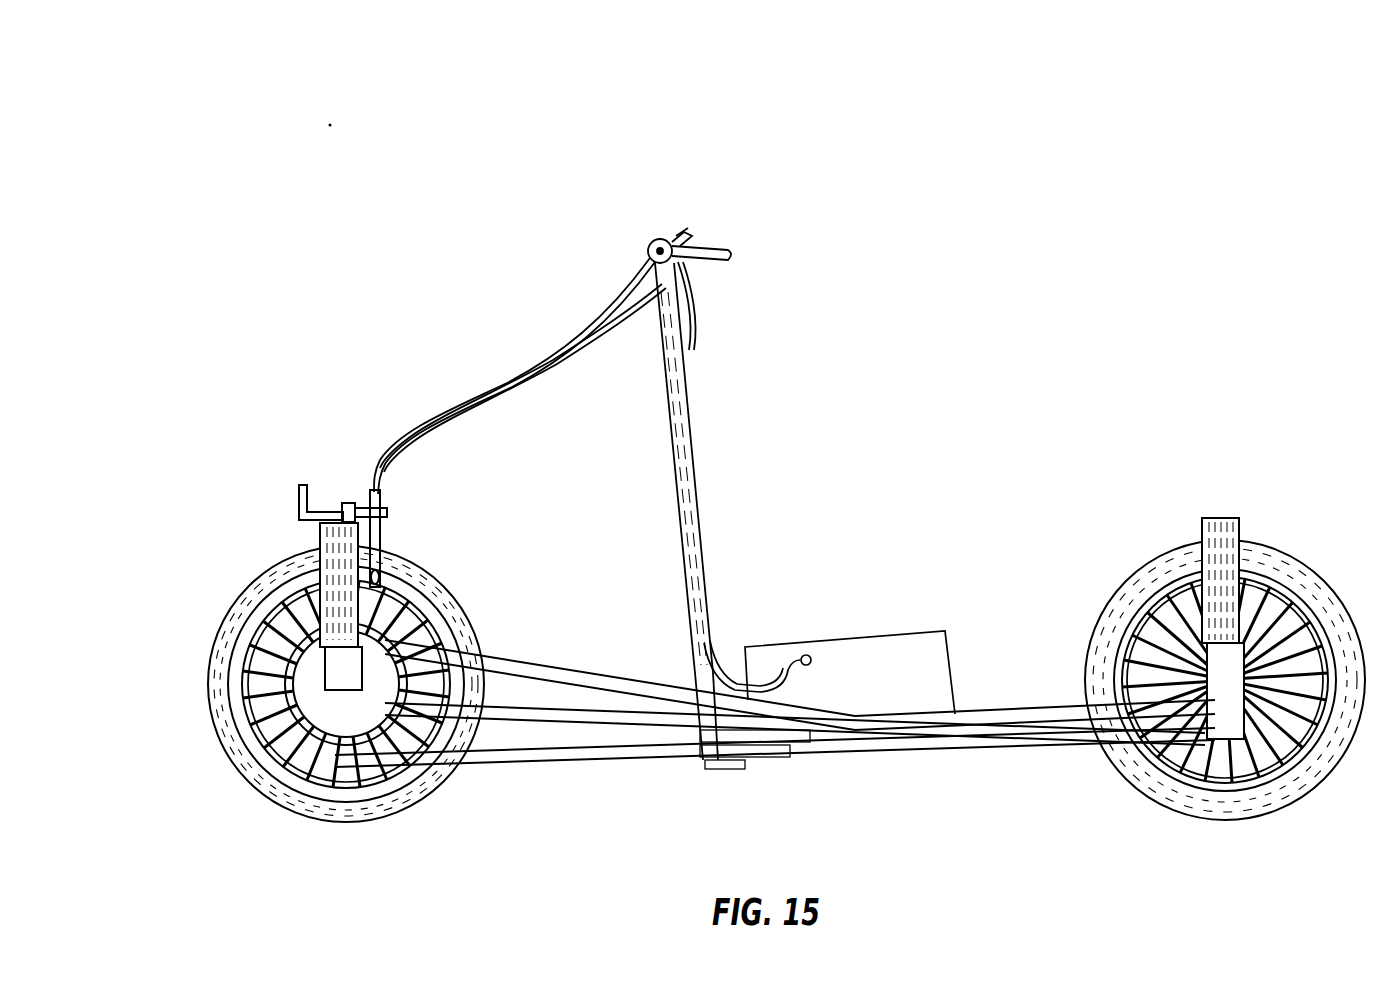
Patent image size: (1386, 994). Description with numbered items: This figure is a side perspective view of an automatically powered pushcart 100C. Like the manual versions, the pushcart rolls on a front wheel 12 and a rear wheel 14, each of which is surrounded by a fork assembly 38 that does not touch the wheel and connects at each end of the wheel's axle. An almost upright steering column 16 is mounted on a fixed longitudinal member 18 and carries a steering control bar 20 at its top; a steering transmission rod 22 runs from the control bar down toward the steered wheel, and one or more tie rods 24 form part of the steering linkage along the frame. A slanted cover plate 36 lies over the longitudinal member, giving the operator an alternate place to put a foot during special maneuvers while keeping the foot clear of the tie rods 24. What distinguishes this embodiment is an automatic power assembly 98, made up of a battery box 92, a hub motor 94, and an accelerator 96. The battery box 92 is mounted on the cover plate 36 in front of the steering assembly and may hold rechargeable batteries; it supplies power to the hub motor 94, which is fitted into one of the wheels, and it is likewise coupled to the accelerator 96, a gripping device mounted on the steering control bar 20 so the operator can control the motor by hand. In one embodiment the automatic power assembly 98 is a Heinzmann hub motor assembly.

The pushcart 100C is at (982, 158).
The front wheel 12 is at (1225, 702).
The rear wheel 14 is at (346, 705).
The steering column 16 is at (700, 470).
The longitudinal member 18 is at (795, 755).
The steering control bar 20 is at (652, 240).
The steering transmission rod 22 is at (645, 262).
The tie rod 24 is at (823, 760).
The cover plate 36 is at (1012, 712).
The fork assembly 38 is at (318, 535).
The battery box 92 is at (903, 631).
The hub motor 94 is at (296, 726).
The accelerator 96 is at (680, 240).
The automatic power assembly 98 is at (858, 520).